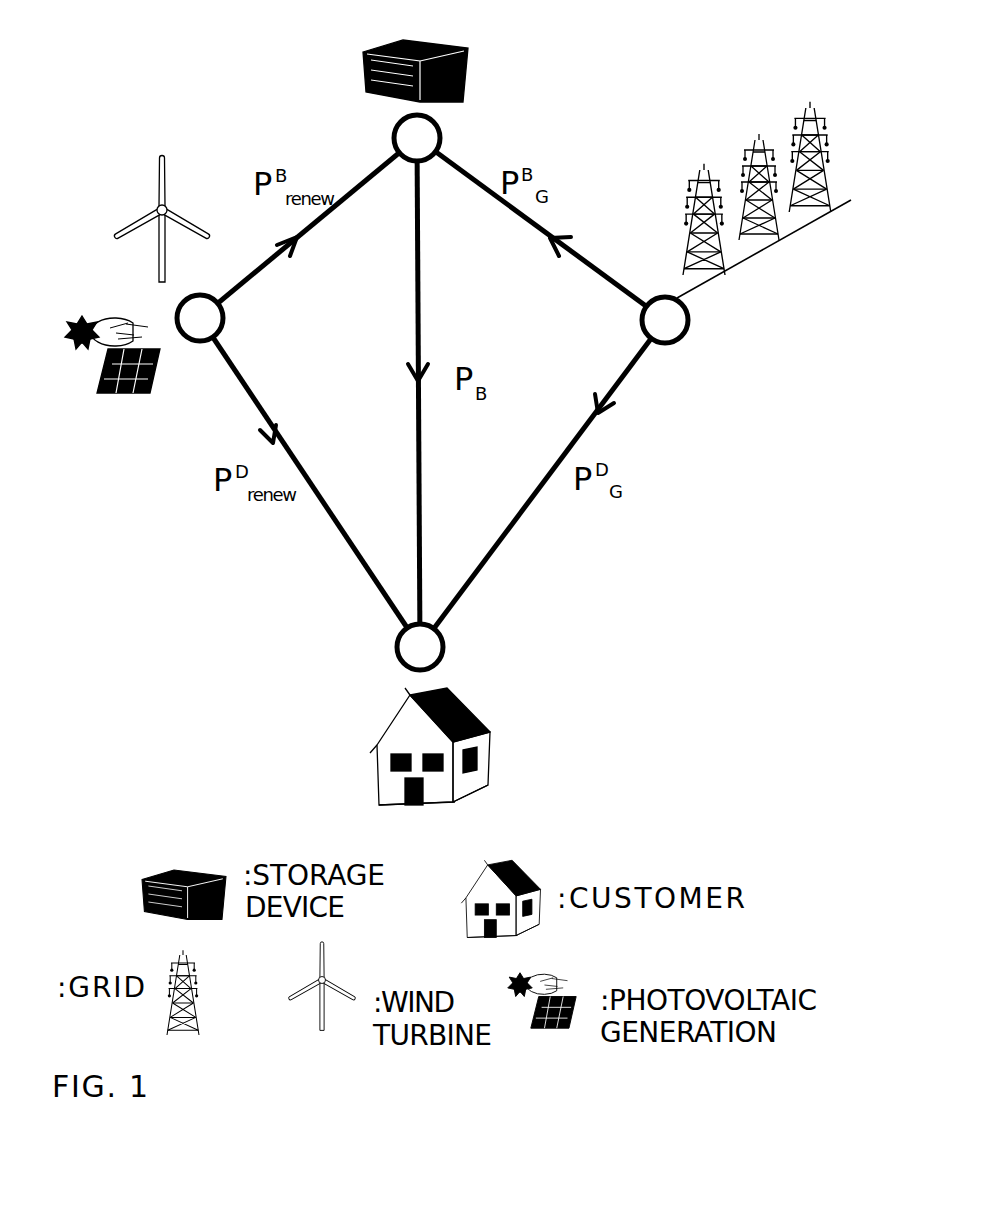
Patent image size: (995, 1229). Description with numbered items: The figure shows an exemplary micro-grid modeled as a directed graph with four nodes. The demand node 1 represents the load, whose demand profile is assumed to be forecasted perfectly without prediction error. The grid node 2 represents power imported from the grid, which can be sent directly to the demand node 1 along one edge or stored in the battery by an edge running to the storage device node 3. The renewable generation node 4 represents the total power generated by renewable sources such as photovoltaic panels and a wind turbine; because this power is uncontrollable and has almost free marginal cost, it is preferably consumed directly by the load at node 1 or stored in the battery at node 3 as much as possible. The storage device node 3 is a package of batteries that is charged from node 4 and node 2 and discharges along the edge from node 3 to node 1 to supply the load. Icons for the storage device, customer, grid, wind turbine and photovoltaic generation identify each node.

The demand node 1 is at (418, 647).
The grid node 2 is at (665, 322).
The storage device node 3 is at (416, 137).
The renewable generation node 4 is at (200, 320).